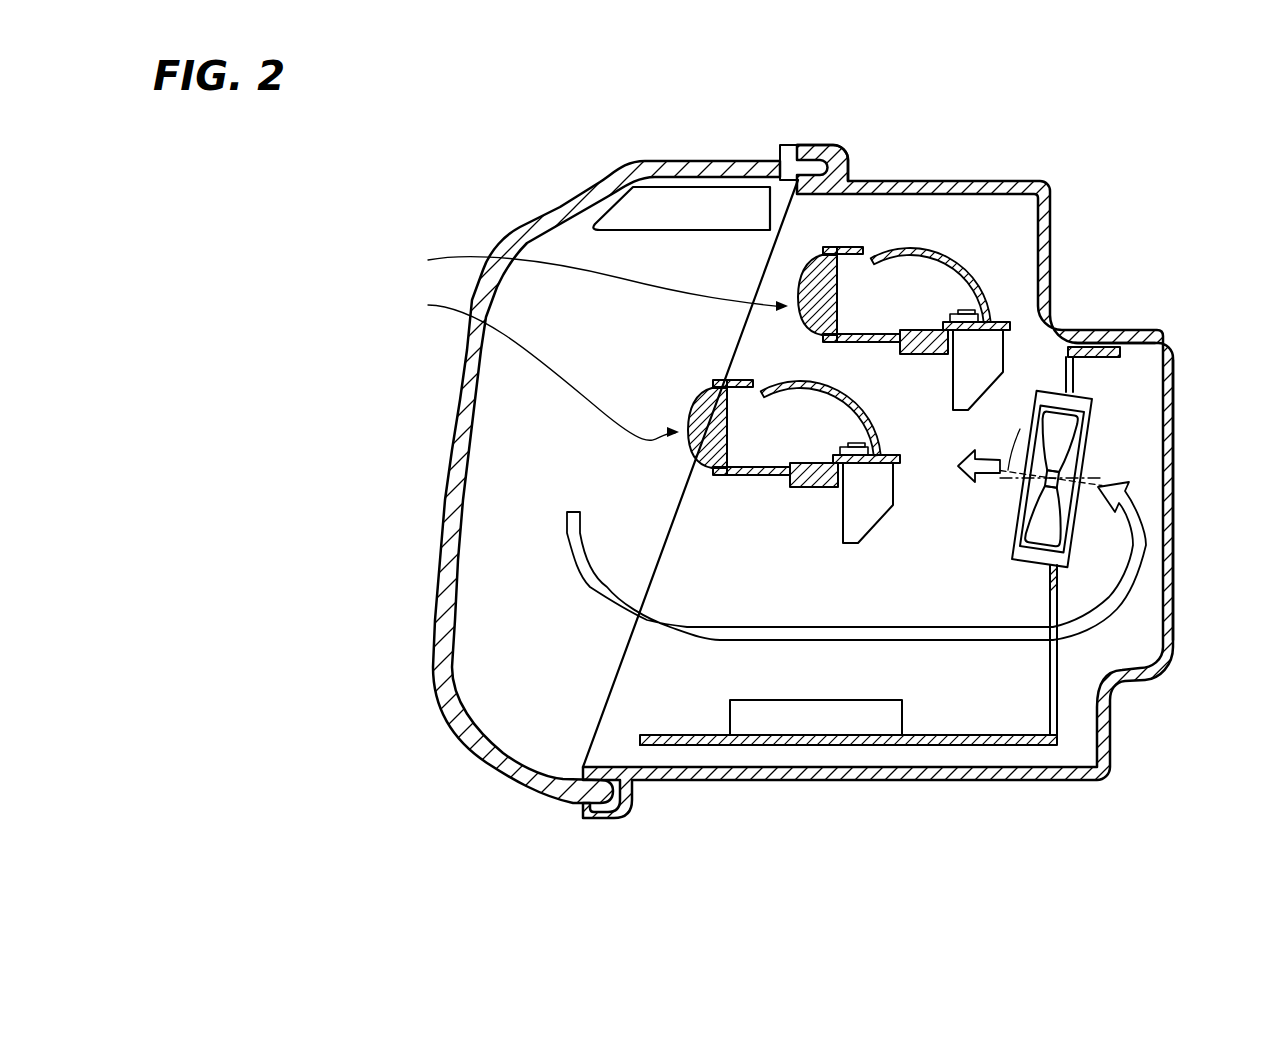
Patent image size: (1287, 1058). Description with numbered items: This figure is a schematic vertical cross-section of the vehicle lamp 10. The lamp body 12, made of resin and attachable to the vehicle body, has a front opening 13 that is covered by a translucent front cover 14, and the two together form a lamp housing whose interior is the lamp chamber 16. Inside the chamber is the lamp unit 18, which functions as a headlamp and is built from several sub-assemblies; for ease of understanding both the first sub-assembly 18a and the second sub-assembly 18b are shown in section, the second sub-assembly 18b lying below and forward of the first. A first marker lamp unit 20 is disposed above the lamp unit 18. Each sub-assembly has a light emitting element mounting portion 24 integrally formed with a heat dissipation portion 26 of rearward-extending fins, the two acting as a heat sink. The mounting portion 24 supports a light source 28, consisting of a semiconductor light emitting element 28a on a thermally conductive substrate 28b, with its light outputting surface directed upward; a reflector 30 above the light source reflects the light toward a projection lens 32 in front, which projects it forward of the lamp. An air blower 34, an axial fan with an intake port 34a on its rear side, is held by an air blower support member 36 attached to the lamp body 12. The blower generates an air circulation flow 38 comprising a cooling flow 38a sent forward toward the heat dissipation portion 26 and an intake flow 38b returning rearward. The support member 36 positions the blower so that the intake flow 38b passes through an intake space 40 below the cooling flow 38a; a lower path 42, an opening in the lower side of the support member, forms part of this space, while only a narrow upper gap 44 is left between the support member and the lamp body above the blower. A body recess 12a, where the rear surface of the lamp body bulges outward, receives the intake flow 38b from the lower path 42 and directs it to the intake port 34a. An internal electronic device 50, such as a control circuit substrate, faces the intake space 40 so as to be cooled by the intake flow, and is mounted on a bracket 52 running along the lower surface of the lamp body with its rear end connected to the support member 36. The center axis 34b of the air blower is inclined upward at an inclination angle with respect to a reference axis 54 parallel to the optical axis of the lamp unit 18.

The vehicle lamp 10 is at (790, 887).
The lamp body 12 is at (1018, 183).
The body recess 12a is at (1188, 325).
The front opening 13 is at (745, 216).
The front cover 14 is at (696, 165).
The lamp chamber 16 is at (844, 170).
The lamp unit 18 is at (387, 240).
The first sub-assembly 18a is at (588, 280).
The second sub-assembly 18b is at (533, 367).
The first marker lamp unit 20 is at (660, 187).
The light emitting element mounting portion 24 is at (834, 454).
The heat dissipation portion 26 is at (880, 478).
The light source 28 is at (937, 328).
The semiconductor light emitting element 28a is at (862, 443).
The substrate 28b is at (913, 358).
The reflector 30 is at (790, 390).
The projection lens 32 is at (697, 392).
The air blower 34 is at (1089, 418).
The intake port 34a is at (1052, 479).
The center axis 34b is at (1098, 481).
The air blower support member 36 is at (1074, 380).
The air circulation flow 38 is at (913, 533).
The cooling flow 38a is at (982, 484).
The intake flow 38b is at (982, 626).
The intake space 40 is at (950, 685).
The lower path 42 is at (1054, 680).
The upper gap 44 is at (1112, 338).
The internal electronic device 50 is at (797, 728).
The bracket 52 is at (750, 744).
The reference axis 54 is at (1088, 477).